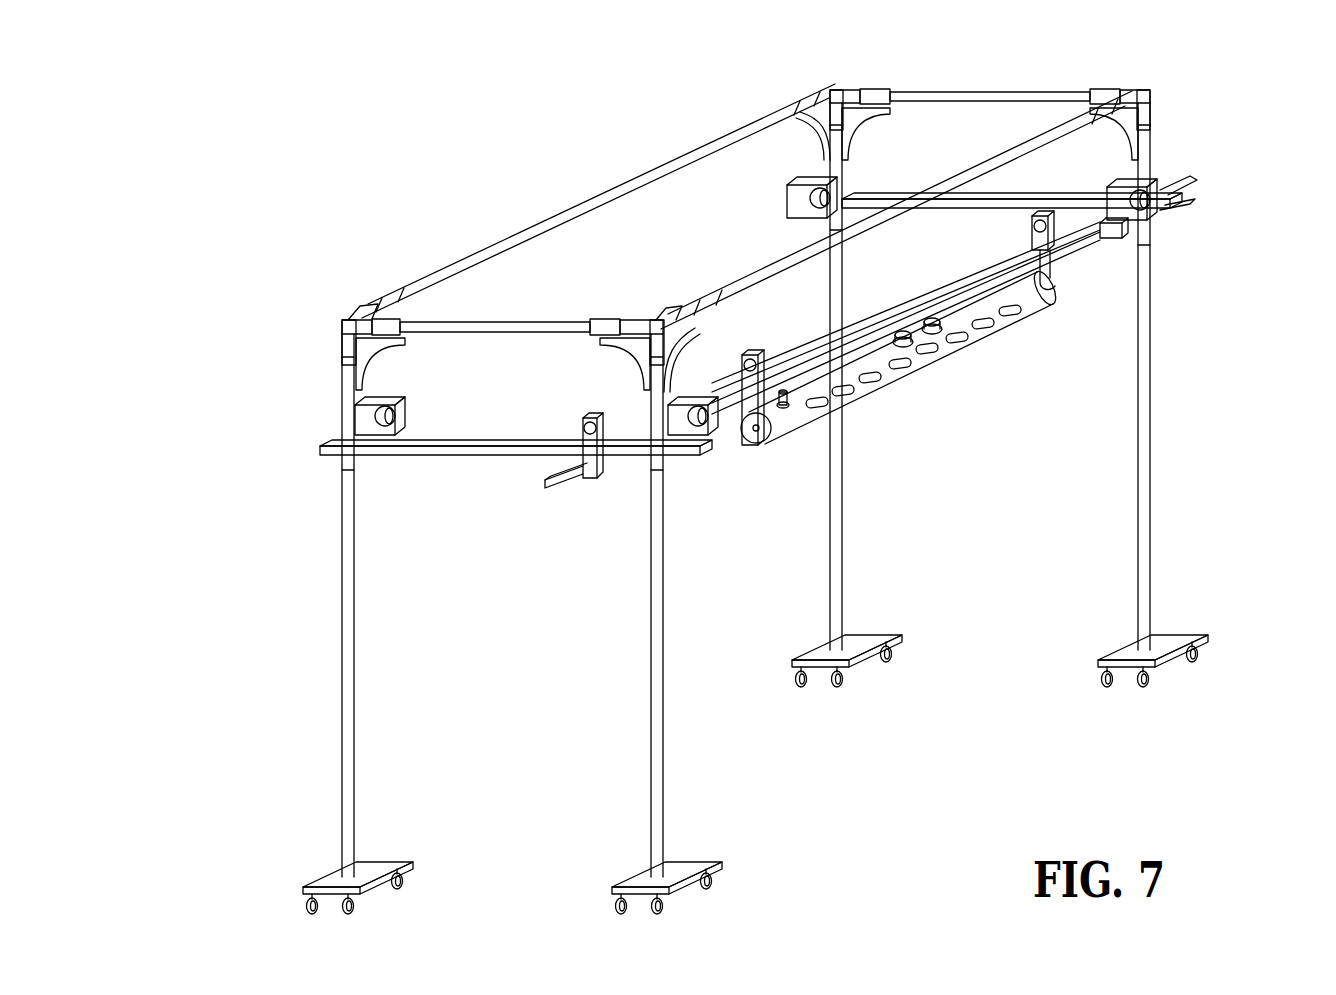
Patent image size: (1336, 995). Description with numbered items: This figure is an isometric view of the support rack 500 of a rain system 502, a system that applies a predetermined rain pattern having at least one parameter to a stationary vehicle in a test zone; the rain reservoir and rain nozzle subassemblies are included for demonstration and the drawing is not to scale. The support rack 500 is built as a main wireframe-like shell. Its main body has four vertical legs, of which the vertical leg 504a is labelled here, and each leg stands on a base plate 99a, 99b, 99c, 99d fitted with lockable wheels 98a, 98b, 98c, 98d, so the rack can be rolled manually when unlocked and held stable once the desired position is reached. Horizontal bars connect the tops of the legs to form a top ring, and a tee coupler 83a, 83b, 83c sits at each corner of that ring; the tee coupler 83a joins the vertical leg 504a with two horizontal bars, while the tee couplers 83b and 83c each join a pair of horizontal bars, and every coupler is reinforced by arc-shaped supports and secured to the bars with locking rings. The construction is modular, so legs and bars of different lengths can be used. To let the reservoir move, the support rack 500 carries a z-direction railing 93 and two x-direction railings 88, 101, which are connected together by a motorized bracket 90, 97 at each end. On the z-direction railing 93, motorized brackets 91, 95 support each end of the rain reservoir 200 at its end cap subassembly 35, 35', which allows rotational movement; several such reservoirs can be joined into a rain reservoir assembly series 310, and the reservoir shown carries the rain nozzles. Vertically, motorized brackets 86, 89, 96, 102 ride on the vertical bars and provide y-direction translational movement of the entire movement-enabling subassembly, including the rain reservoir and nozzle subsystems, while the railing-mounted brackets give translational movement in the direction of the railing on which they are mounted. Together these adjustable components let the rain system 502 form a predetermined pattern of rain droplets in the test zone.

The support rack 500 is at (1217, 100).
The rain system 502 is at (258, 135).
The vertical leg 504a is at (307, 742).
The tee coupler 83a is at (340, 333).
The tee coupler 83b is at (827, 92).
The tee coupler 83c is at (1140, 88).
The motorized bracket 86 is at (780, 205).
The x-direction railing 88 is at (1058, 187).
The motorized bracket 89 is at (1157, 200).
The motorized bracket 90 is at (1108, 240).
The motorized bracket 91 is at (1058, 232).
The z-direction railing 93 is at (807, 347).
The motorized bracket 95 is at (730, 373).
The motorized bracket 96 is at (707, 428).
The motorized bracket 97 is at (587, 487).
The lockable wheels 98a is at (282, 915).
The lockable wheels 98b is at (880, 688).
The lockable wheels 98c is at (1175, 695).
The lockable wheels 98d is at (693, 915).
The base plate 99a is at (373, 872).
The base plate 99b is at (863, 640).
The base plate 99c is at (1172, 640).
The base plate 99d is at (680, 872).
The x-direction railing 101 is at (405, 460).
The motorized bracket 102 is at (403, 413).
The rain reservoir assembly 200 is at (875, 390).
The rain reservoir assembly series 310 is at (800, 415).
The end cap subassembly 35 is at (1076, 331).
The end cap subassembly 35' is at (773, 467).